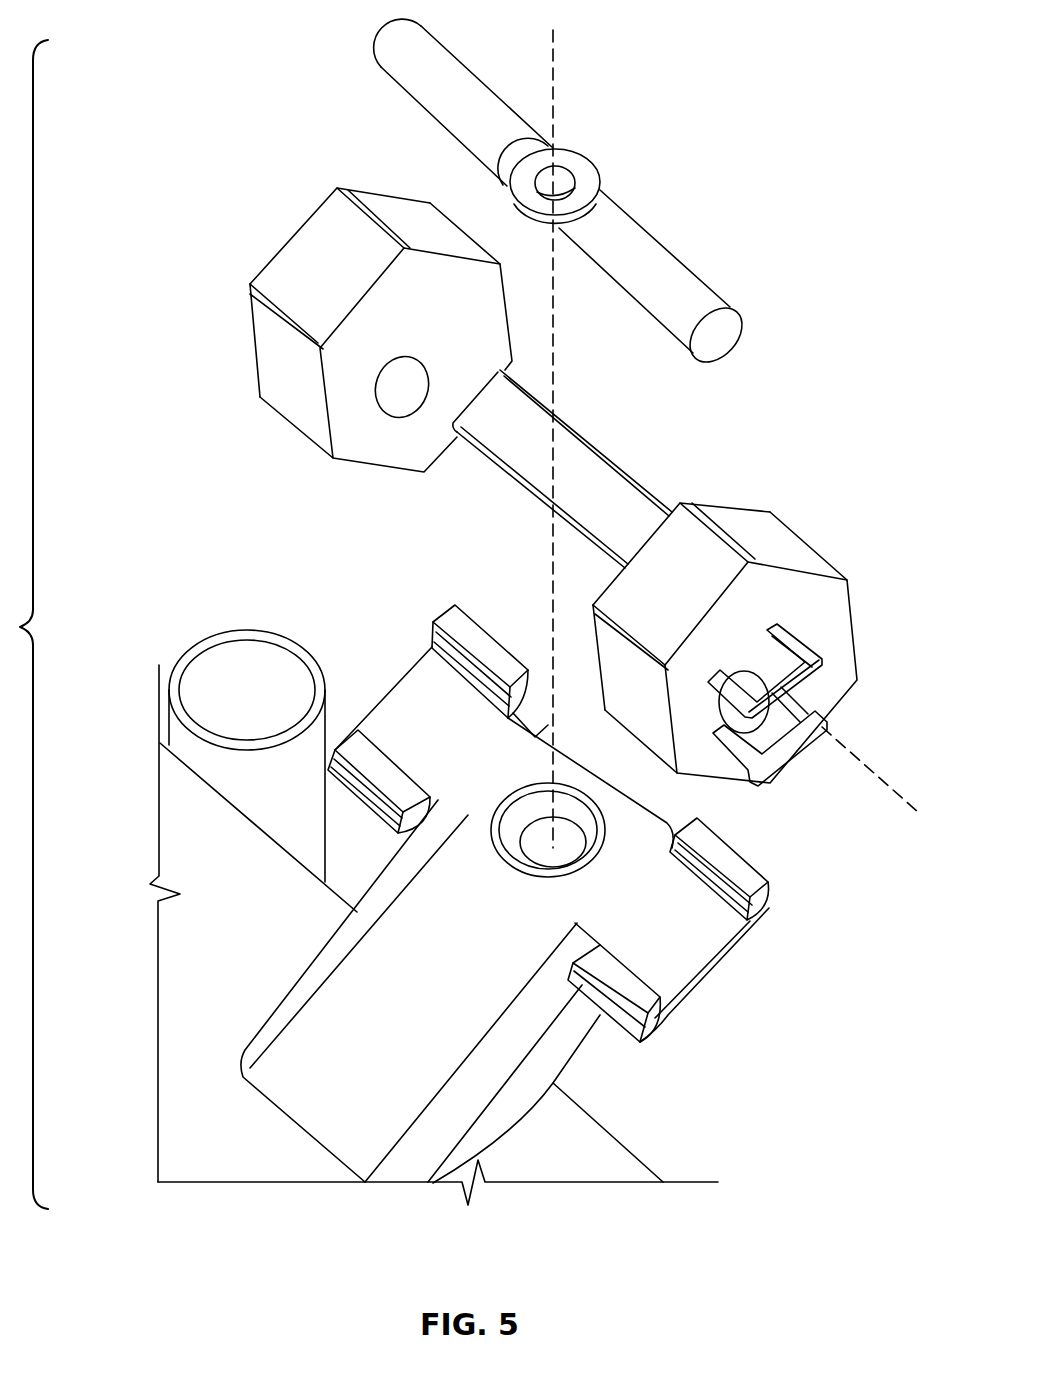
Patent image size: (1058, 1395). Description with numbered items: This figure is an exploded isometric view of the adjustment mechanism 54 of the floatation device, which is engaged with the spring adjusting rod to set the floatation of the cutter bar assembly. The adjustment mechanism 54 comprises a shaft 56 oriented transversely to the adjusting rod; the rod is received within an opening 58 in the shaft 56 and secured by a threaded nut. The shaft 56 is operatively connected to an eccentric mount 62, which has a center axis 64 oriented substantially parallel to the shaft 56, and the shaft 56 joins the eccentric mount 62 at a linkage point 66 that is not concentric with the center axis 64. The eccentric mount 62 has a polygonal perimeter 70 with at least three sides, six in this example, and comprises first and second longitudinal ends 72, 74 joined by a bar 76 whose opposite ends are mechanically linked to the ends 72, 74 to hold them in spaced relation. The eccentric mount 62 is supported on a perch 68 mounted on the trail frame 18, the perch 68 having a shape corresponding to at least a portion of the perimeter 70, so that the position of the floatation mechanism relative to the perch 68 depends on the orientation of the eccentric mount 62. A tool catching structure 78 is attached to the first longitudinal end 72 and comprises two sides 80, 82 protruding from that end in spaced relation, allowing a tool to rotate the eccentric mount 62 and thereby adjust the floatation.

The trail frame 18 is at (590, 1157).
The adjustment mechanism 54 is at (786, 343).
The shaft 56 is at (658, 273).
The opening 58 is at (575, 167).
The eccentric mount 62 is at (752, 614).
The center axis 64 is at (908, 805).
The linkage point 66 is at (743, 723).
The perch 68 is at (680, 973).
The polygonal perimeter 70 is at (536, 877).
The first longitudinal end 72 is at (853, 613).
The second longitudinal end 74 is at (303, 404).
The bar 76 is at (603, 483).
The tool catching structure 78 is at (819, 604).
The side 80 is at (797, 733).
The side 82 is at (798, 650).